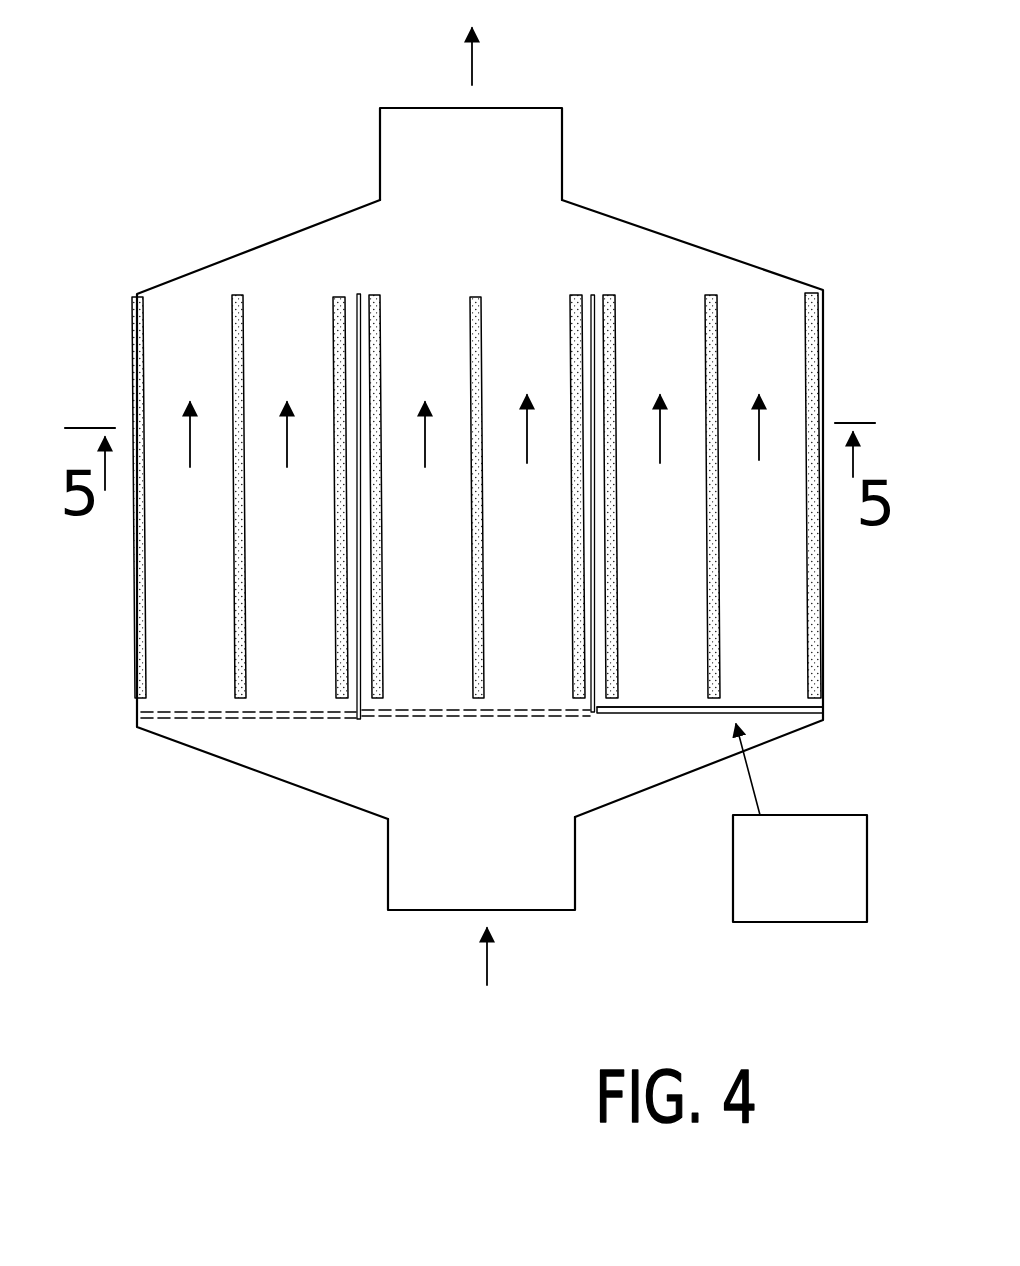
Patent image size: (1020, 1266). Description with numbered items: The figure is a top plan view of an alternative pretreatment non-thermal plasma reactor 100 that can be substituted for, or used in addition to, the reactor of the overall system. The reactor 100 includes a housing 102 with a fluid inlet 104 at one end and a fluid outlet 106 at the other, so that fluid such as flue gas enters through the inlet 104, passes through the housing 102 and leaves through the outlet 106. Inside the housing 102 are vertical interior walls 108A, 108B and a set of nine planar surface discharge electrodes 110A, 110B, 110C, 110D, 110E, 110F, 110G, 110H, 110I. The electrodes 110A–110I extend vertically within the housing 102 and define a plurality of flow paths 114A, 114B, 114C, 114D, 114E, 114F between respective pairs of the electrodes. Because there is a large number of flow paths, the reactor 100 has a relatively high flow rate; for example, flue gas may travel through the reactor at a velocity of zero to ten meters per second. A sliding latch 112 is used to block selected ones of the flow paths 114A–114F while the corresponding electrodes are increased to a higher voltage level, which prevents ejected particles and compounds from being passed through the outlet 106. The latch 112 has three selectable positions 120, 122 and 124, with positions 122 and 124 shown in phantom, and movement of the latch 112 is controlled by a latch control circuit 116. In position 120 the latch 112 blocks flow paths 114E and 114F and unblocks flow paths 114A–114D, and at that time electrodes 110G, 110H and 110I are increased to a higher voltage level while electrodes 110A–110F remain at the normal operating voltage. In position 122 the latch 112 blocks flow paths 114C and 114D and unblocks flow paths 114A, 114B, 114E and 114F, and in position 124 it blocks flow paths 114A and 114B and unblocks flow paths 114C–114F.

The reactor 100 is at (513, 506).
The housing 102 is at (480, 497).
The fluid inlet 104 is at (414, 910).
The fluid outlet 106 is at (418, 108).
The vertical interior wall 108A is at (356, 295).
The vertical interior wall 108B is at (590, 296).
The planar surface discharge electrode 110A is at (143, 308).
The planar surface discharge electrode 110B is at (244, 304).
The planar surface discharge electrode 110C is at (332, 310).
The planar surface discharge electrode 110D is at (372, 295).
The planar surface discharge electrode 110E is at (470, 298).
The planar surface discharge electrode 110F is at (570, 303).
The planar surface discharge electrode 110G is at (616, 298).
The planar surface discharge electrode 110H is at (704, 303).
The planar surface discharge electrode 110I is at (804, 302).
The sliding latch 112 is at (763, 702).
The flow path 114A is at (187, 428).
The flow path 114B is at (284, 425).
The flow path 114C is at (422, 420).
The flow path 114D is at (524, 418).
The flow path 114E is at (657, 418).
The flow path 114F is at (755, 412).
The latch control circuit 116 is at (828, 815).
The latch position 120 is at (654, 716).
The latch position 122 is at (483, 717).
The latch position 124 is at (268, 720).